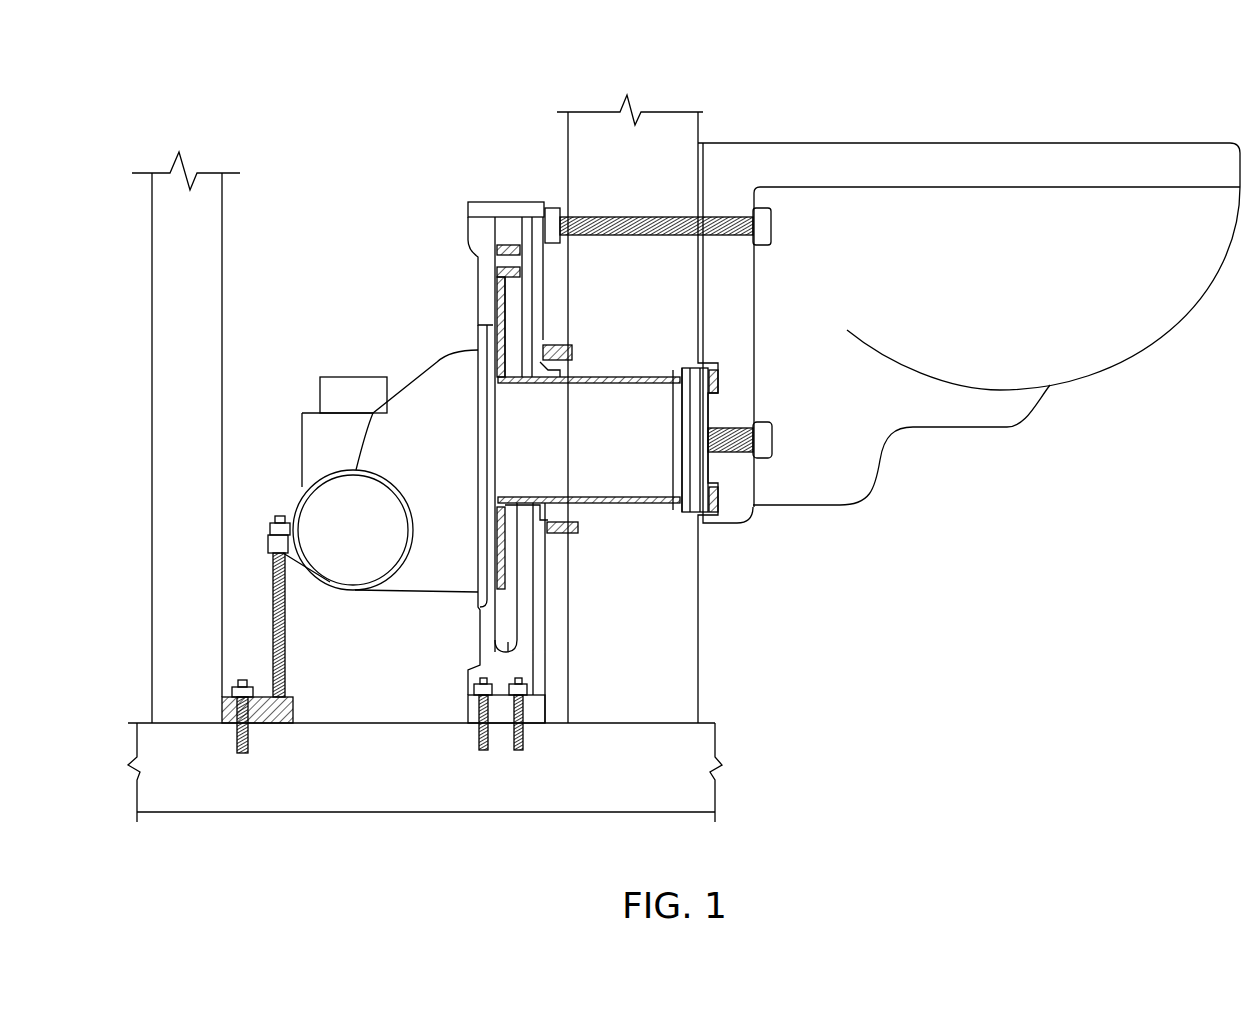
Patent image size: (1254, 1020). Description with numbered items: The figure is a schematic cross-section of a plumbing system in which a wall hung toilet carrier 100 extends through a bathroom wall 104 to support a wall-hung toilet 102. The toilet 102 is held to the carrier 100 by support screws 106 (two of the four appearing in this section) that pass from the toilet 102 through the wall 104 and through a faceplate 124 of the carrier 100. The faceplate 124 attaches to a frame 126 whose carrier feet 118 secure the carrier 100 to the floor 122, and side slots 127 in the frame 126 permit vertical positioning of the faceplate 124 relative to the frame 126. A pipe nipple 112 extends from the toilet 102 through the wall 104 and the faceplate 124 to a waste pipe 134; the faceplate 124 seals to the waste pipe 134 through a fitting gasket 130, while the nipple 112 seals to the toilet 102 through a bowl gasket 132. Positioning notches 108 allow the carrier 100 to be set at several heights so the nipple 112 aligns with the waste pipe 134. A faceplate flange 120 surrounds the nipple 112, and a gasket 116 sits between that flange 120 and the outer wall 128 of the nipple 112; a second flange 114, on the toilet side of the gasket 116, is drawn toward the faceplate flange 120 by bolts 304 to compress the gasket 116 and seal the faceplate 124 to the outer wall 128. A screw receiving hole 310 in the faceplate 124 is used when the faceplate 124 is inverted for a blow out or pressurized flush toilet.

The wall hung toilet carrier 100 is at (250, 65).
The wall-hung toilet 102 is at (1068, 395).
The bathroom wall 104 is at (697, 176).
The support screws 106 is at (668, 217).
The positioning notches 108 is at (503, 618).
The pipe nipple 112 is at (718, 405).
The second flange 114 is at (546, 345).
The gasket 116 is at (575, 527).
The carrier feet 118 is at (463, 690).
The faceplate flange 120 is at (495, 292).
The floor 122 is at (403, 725).
The faceplate 124 is at (497, 295).
The frame 126 is at (478, 202).
The side slots 127 is at (508, 645).
The outer wall 128 is at (620, 505).
The fitting gasket 130 is at (488, 340).
The bowl gasket 132 is at (710, 523).
The waste pipe 134 is at (428, 594).
The bolts 304 is at (575, 350).
The screw receiving hole 310 is at (545, 348).